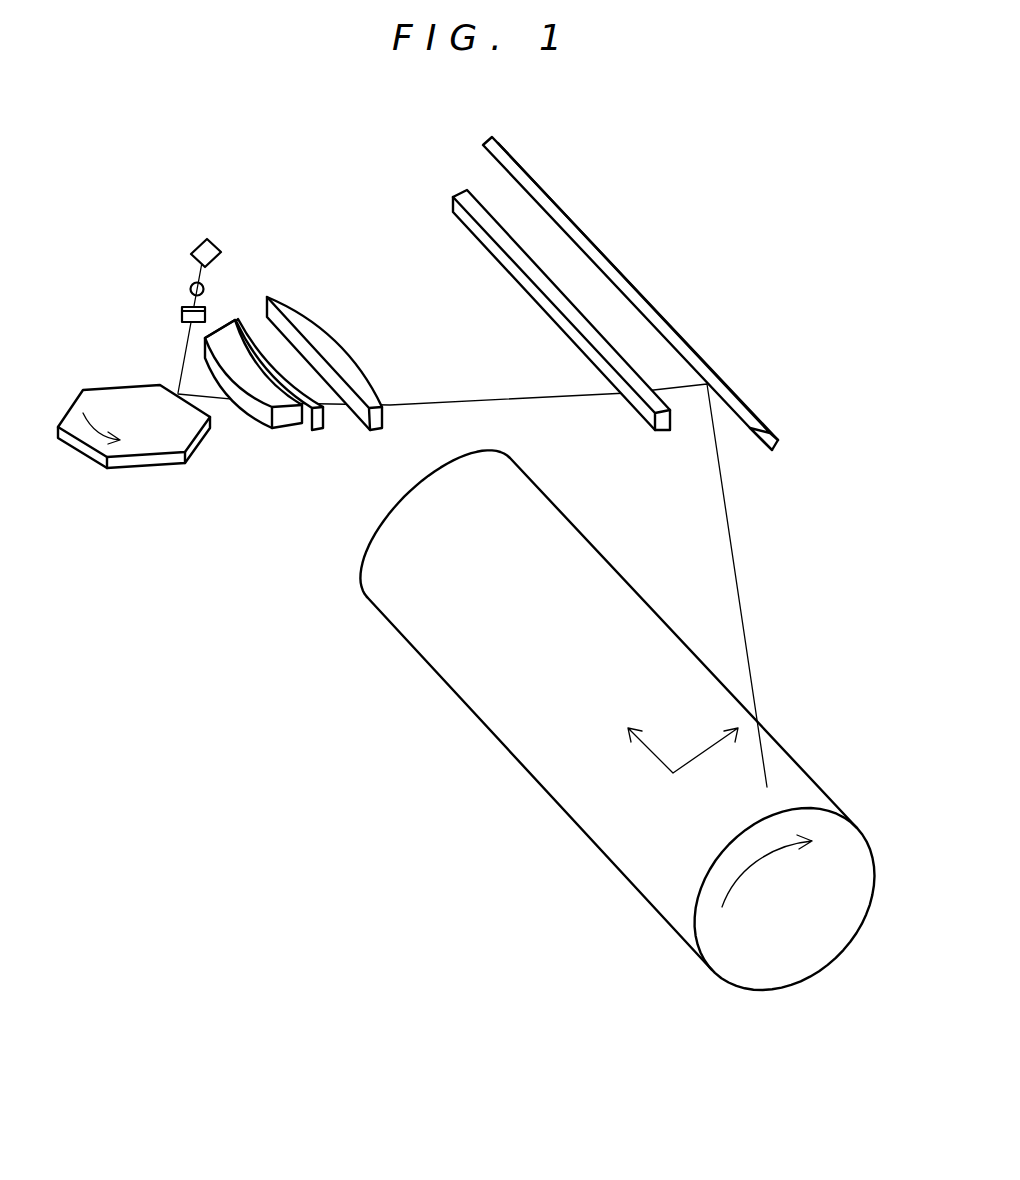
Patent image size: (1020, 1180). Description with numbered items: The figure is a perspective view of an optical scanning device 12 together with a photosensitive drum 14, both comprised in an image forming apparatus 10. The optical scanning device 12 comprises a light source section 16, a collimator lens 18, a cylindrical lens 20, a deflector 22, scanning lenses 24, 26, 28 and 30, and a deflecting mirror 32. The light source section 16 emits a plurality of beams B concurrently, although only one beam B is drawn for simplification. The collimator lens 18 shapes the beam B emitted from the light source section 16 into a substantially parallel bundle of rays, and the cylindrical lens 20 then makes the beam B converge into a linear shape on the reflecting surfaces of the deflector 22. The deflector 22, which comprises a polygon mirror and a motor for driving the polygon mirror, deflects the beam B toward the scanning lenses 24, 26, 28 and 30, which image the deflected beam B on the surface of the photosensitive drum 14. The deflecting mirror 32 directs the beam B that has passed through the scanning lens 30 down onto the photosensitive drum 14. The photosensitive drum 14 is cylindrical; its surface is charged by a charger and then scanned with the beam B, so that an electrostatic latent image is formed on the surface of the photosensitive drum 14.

The image forming apparatus 10 is at (133, 197).
The optical scanning device 12 is at (311, 244).
The photosensitive drum 14 is at (555, 770).
The light source section 16 is at (188, 250).
The collimator lens 18 is at (191, 288).
The cylindrical lens 20 is at (182, 315).
The deflector 22 is at (142, 445).
The scanning lens 24 is at (283, 430).
The scanning lens 26 is at (320, 430).
The scanning lens 28 is at (377, 427).
The scanning lens 30 is at (552, 312).
The deflecting mirror 32 is at (595, 255).
The beam B is at (181, 368).